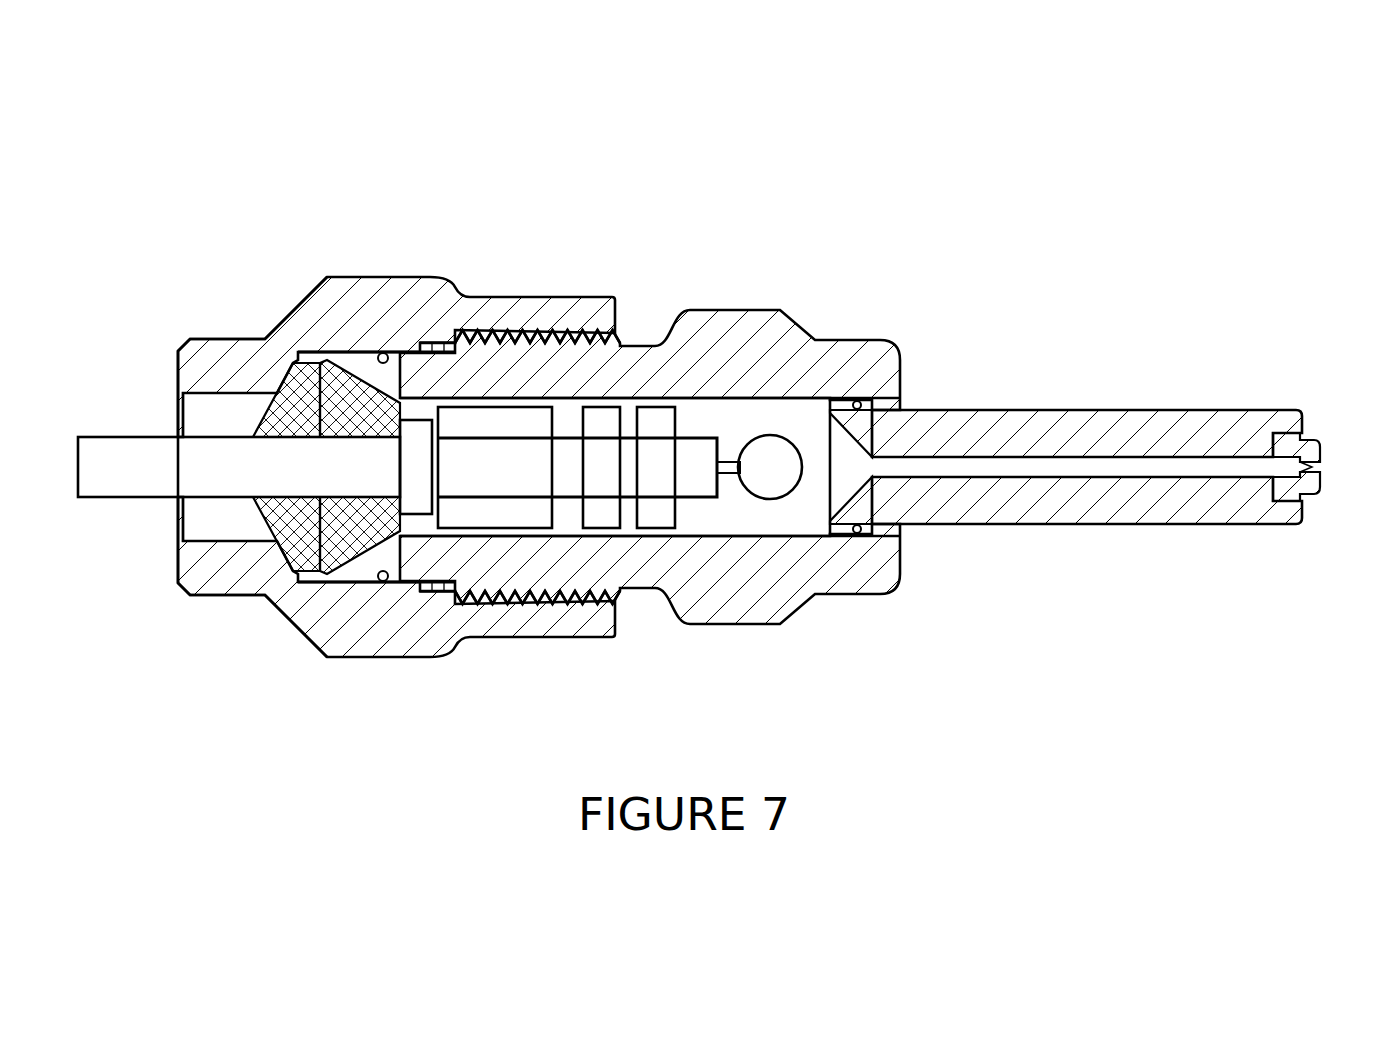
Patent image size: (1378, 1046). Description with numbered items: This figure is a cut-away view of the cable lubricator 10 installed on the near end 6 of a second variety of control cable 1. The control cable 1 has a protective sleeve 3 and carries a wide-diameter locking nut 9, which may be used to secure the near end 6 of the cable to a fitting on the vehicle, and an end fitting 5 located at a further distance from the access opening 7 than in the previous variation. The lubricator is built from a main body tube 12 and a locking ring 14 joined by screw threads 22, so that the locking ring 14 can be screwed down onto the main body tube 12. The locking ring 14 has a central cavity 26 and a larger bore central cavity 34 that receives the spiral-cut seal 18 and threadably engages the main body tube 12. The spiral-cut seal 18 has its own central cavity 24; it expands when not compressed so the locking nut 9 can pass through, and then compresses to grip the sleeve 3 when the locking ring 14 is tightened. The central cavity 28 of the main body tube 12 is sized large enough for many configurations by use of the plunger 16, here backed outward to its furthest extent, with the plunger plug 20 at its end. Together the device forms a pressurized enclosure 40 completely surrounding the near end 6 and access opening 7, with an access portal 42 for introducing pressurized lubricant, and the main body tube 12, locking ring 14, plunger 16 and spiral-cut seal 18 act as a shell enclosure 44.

The cable lubricator 10 is at (719, 431).
The pressurized enclosure 40 is at (719, 431).
The shell enclosure 44 is at (375, 150).
The control cable 1 is at (202, 483).
The protective sleeve 3 is at (384, 483).
The end fitting 5 is at (777, 483).
The near end 6 is at (424, 601).
The access opening 7 is at (400, 512).
The locking nut 9 is at (505, 483).
The main body tube 12 is at (795, 582).
The locking ring 14 is at (375, 643).
The plunger 16 is at (1047, 430).
The spiral-cut seal 18 is at (290, 560).
The plunger plug 20 is at (1316, 525).
The access portal 42 is at (1320, 470).
The screw threads 22 is at (620, 328).
The central cavity of spiral-cut seal 24 is at (437, 417).
The central cavity of locking ring 26 is at (232, 428).
The central cavity of main body tube 28 is at (750, 535).
The larger bore central cavity 34 is at (305, 560).